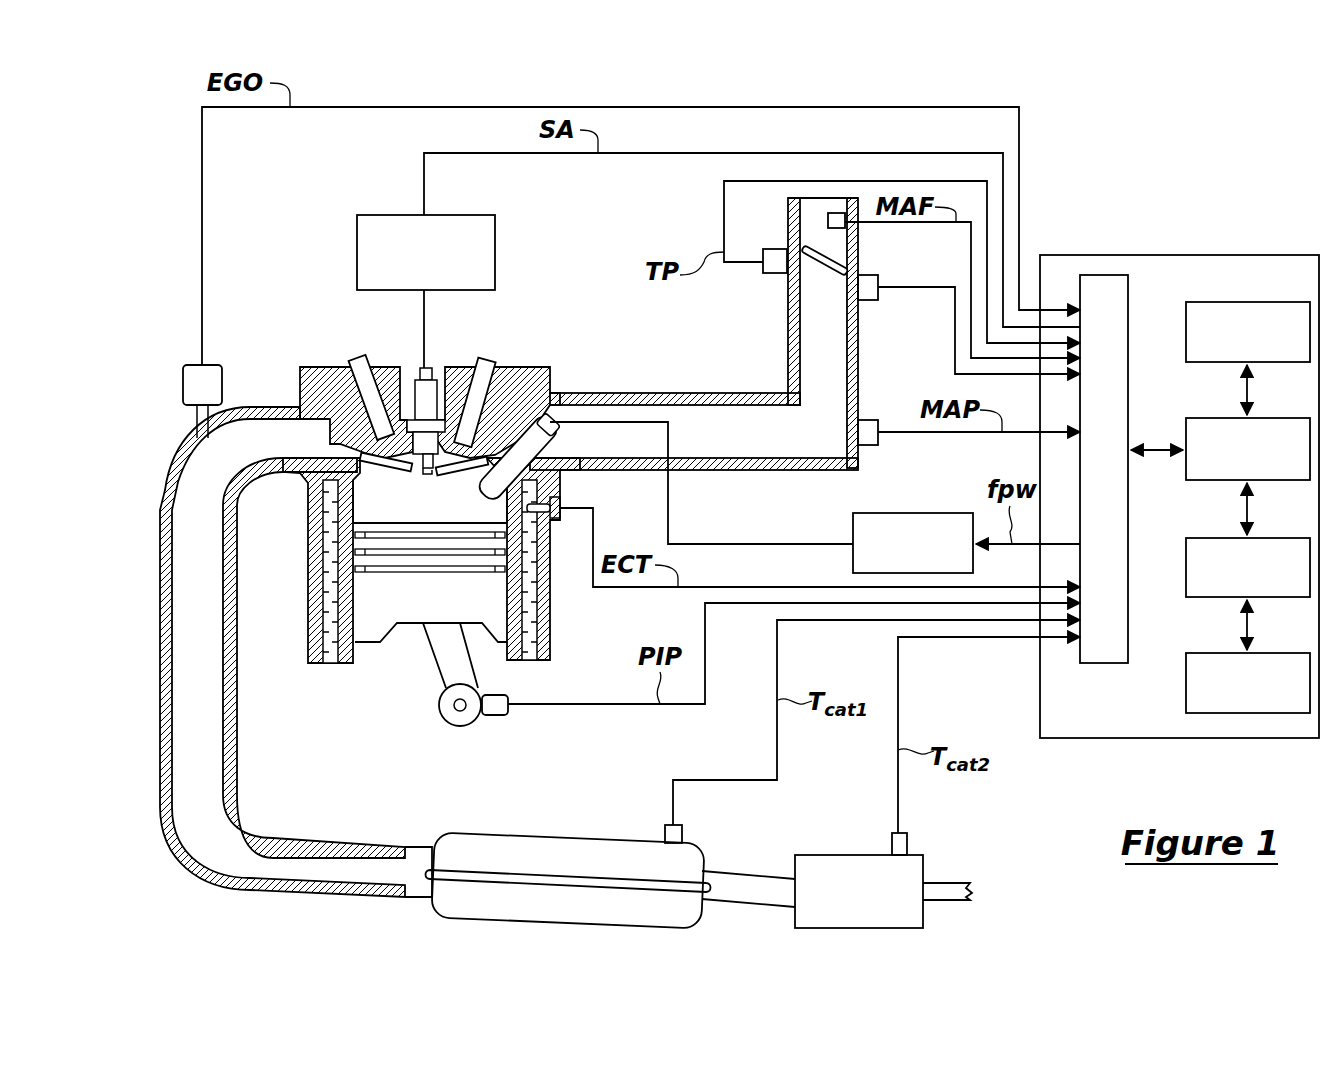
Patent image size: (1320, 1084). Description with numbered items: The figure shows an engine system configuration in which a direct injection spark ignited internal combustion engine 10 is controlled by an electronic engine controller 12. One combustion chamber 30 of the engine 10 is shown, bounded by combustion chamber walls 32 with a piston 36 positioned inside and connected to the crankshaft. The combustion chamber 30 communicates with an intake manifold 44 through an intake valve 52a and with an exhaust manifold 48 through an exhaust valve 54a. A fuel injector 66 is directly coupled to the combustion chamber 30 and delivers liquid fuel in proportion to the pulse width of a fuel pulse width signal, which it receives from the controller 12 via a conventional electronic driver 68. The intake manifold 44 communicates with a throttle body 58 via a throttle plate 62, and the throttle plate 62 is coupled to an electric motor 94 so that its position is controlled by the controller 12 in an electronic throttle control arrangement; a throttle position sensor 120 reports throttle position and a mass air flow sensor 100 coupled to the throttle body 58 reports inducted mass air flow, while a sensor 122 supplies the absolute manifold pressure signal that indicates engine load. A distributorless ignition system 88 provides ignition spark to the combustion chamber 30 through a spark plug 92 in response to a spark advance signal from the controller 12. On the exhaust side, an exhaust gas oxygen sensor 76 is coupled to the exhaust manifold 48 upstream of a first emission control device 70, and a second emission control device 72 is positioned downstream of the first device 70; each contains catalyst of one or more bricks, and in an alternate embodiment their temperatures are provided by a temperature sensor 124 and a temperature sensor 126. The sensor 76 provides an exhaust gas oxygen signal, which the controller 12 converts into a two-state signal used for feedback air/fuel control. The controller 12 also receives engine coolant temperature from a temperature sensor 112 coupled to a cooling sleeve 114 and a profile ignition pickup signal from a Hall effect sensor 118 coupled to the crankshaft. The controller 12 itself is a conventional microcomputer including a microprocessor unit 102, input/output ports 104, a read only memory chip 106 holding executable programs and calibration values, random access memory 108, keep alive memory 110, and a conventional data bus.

The direct injection spark ignited internal combustion engine 10 is at (318, 316).
The electronic engine controller 12 is at (1242, 255).
The combustion chamber 30 is at (352, 504).
The combustion chamber walls 32 is at (350, 665).
The piston 36 is at (408, 612).
The intake manifold 44 is at (752, 420).
The exhaust manifold 48 is at (185, 492).
The intake valve 52a is at (500, 357).
The exhaust valve 54a is at (358, 453).
The throttle body 58 is at (825, 344).
The throttle plate 62 is at (830, 272).
The fuel injector 66 is at (568, 400).
The electronic driver 68 is at (910, 513).
The first emission control device 70 is at (562, 833).
The second emission control device 72 is at (833, 855).
The exhaust gas oxygen sensor 76 is at (200, 365).
The distributorless ignition system 88 is at (357, 232).
The spark plug 92 is at (405, 366).
The electric motor 94 is at (868, 275).
The mass air flow sensor 100 is at (835, 213).
The microprocessor unit 102 is at (1200, 418).
The input/output ports 104 is at (1128, 298).
The read only memory chip 106 is at (1250, 302).
The random access memory 108 is at (1200, 538).
The keep alive memory 110 is at (1200, 653).
The temperature sensor 112 is at (560, 505).
The cooling sleeve 114 is at (545, 635).
The Hall effect sensor 118 is at (492, 718).
The throttle position sensor 120 is at (775, 249).
The manifold pressure sensor 122 is at (870, 420).
The temperature sensor 124 is at (682, 835).
The temperature sensor 126 is at (907, 845).